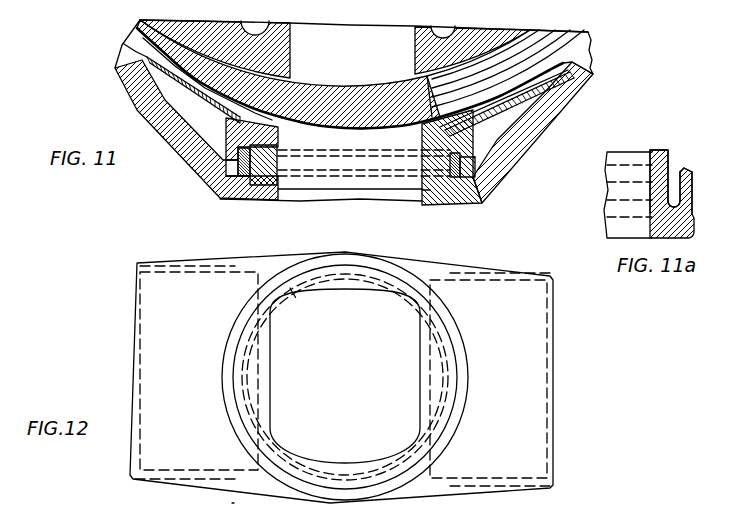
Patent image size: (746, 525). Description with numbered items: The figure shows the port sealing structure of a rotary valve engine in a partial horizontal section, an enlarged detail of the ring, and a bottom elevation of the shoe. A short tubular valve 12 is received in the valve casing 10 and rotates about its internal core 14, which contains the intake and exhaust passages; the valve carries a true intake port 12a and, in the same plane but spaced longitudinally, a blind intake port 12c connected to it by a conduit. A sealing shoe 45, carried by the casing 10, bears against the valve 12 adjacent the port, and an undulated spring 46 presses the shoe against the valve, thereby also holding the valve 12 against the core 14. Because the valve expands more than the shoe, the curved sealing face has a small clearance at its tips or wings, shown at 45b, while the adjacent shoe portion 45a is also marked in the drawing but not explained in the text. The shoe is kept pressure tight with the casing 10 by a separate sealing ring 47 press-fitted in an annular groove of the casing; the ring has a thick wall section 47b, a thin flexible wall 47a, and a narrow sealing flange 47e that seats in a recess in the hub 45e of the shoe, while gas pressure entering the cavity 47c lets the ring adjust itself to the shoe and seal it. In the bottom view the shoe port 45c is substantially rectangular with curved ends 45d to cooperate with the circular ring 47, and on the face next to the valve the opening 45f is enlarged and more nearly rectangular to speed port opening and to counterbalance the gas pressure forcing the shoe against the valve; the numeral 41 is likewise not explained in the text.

In FIG. 11, the valve casing 10 is at (527, 150).
In FIG. 11, the tubular valve 12 is at (312, 90).
In FIG. 11, the intake port 12a is at (525, 34).
In FIG. 11, the blind intake port 12c is at (530, 33).
In FIG. 11, the valve core 14 is at (281, 34).
In FIG. 12, the plate 41 is at (239, 514).
In FIG. 11, the sealing shoe 45 is at (152, 118).
In FIG. 12, the sealing shoe 45 is at (553, 432).
In FIG. 11, the ring plate 45a is at (130, 52).
In FIG. 12, the ring plate 45a is at (148, 340).
In FIG. 11, the tip clearance of sealing shoe 45b is at (137, 31).
In FIG. 12, the port 45c is at (402, 368).
In FIG. 12, the curved ends of port 45d is at (303, 458).
In FIG. 11, the hub of sealing shoe 45e is at (473, 157).
In FIG. 11, the enlarged port opening 45f is at (278, 127).
In FIG. 12, the enlarged port opening 45f is at (290, 288).
In FIG. 11, the spring 46 is at (363, 173).
In FIG. 11, the sealing ring 47 is at (425, 178).
In FIG. 11A, the sealing ring 47 is at (680, 238).
In FIG. 12, the sealing ring 47 is at (357, 483).
In FIG. 11A, the flexible wall 47a is at (690, 200).
In FIG. 11A, the thick wall section 47b is at (659, 158).
In FIG. 11A, the cavity 47c is at (675, 170).
In FIG. 11A, the sealing flange 47e is at (692, 177).